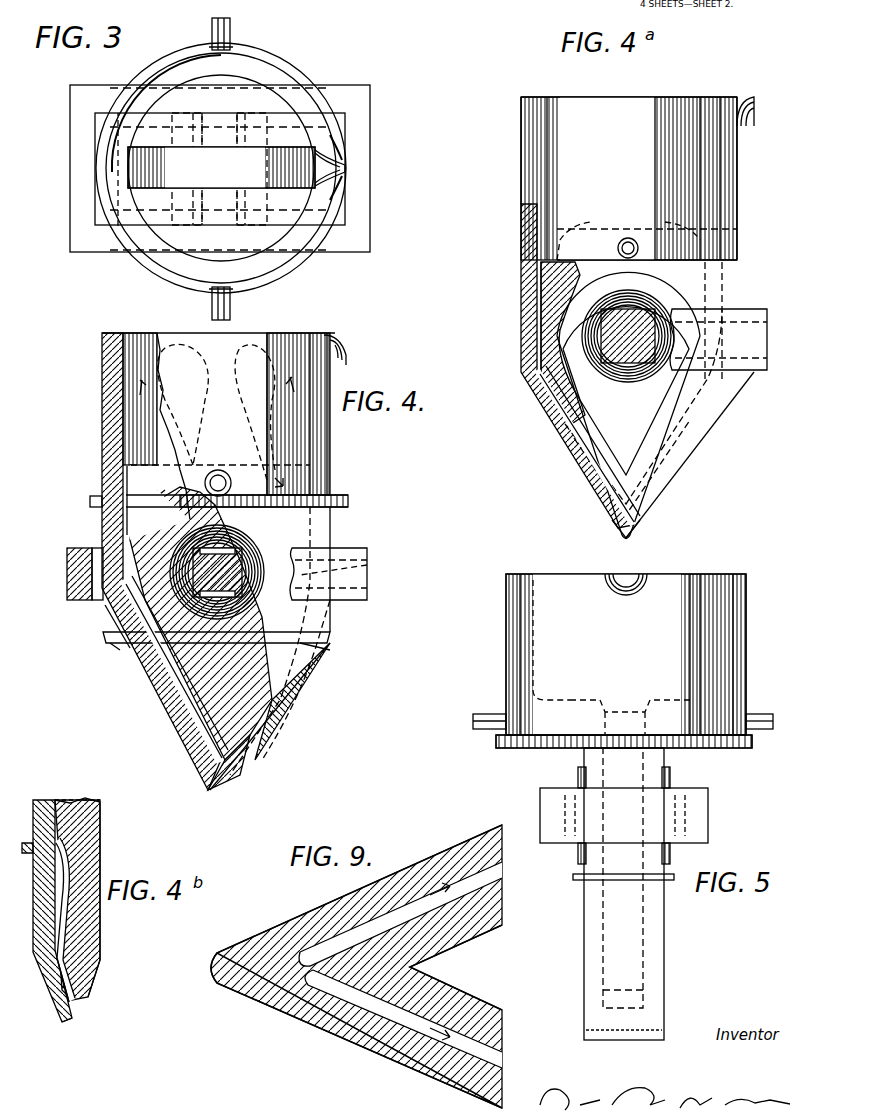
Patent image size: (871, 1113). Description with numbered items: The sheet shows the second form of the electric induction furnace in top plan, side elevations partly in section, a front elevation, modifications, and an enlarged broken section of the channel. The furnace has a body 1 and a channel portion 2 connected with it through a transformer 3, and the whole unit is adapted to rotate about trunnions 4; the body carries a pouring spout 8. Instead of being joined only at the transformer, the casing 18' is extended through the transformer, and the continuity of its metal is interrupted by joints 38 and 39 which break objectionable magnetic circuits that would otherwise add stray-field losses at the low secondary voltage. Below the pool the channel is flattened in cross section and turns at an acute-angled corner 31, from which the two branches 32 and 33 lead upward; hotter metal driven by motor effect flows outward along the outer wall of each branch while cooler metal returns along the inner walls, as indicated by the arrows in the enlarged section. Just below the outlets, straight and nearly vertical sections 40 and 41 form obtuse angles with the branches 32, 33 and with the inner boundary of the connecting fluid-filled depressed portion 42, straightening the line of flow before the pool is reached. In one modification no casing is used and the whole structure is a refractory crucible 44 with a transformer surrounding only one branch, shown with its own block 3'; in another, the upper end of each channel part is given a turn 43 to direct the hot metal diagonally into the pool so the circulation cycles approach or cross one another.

In FIG. 3, the body 1 is at (150, 256).
In FIG. 4, the body 1 is at (102, 401).
In FIG. 4A, the body 1 is at (737, 160).
In FIG. 4B, the body 1 is at (38, 800).
In FIG. 5, the body 1 is at (746, 630).
In FIG. 4, the channel portion 2 is at (245, 742).
In FIG. 4A, the channel portion 2 is at (676, 475).
In FIG. 4B, the channel portion 2 is at (68, 1020).
In FIG. 9, the channel portion 2 is at (356, 966).
In FIG. 5, the channel portion 2 is at (664, 962).
In FIG. 3, the transformer 3 is at (230, 168).
In FIG. 4, the transformer 3 is at (299, 648).
In FIG. 5, the transformer 3 is at (633, 815).
In FIG. 4A, the mounting block 3' is at (711, 443).
In FIG. 3, the trunnions 4 is at (230, 30).
In FIG. 4, the trunnions 4 is at (218, 474).
In FIG. 4A, the trunnions 4 is at (628, 238).
In FIG. 5, the trunnions 4 is at (484, 714).
In FIG. 3, the pouring spout 8 is at (345, 168).
In FIG. 4, the pouring spout 8 is at (338, 348).
In FIG. 4A, the pouring spout 8 is at (754, 100).
In FIG. 5, the pouring spout 8 is at (628, 585).
In FIG. 3, the casing 18' is at (86, 199).
In FIG. 4, the casing 18' is at (85, 626).
In FIG. 5, the casing 18' is at (649, 811).
In FIG. 4, the turn 31 is at (205, 757).
In FIG. 4A, the turn 31 is at (612, 517).
In FIG. 9, the turn 31 is at (288, 965).
In FIG. 4, the branch of the channel 32 is at (262, 708).
In FIG. 4A, the branch of the channel 32 is at (690, 442).
In FIG. 9, the branch of the channel 32 is at (360, 998).
In FIG. 4, the branch of the channel 33 is at (170, 700).
In FIG. 4A, the branch of the channel 33 is at (555, 412).
In FIG. 4B, the branch of the channel 33 is at (62, 990).
In FIG. 9, the branch of the channel 33 is at (368, 925).
In FIG. 4, the joint 38 is at (346, 497).
In FIG. 5, the joint 38 is at (540, 749).
In FIG. 4, the joint 39 is at (327, 640).
In FIG. 5, the joint 39 is at (573, 878).
In FIG. 4, the straight section 40 is at (130, 577).
In FIG. 4A, the straight section 40 is at (540, 328).
In FIG. 4B, the straight section 40 is at (62, 930).
In FIG. 4, the straight section 41 is at (367, 566).
In FIG. 4A, the straight section 41 is at (730, 335).
In FIG. 3, the depressed portion 42 is at (278, 190).
In FIG. 4, the depressed portion 42 is at (168, 494).
In FIG. 4A, the depressed portion 42 is at (562, 331).
In FIG. 4B, the depressed portion 42 is at (88, 815).
In FIG. 5, the depressed portion 42 is at (630, 710).
In FIG. 4B, the turn 43 is at (85, 870).
In FIG. 4A, the crucible 44 is at (607, 146).